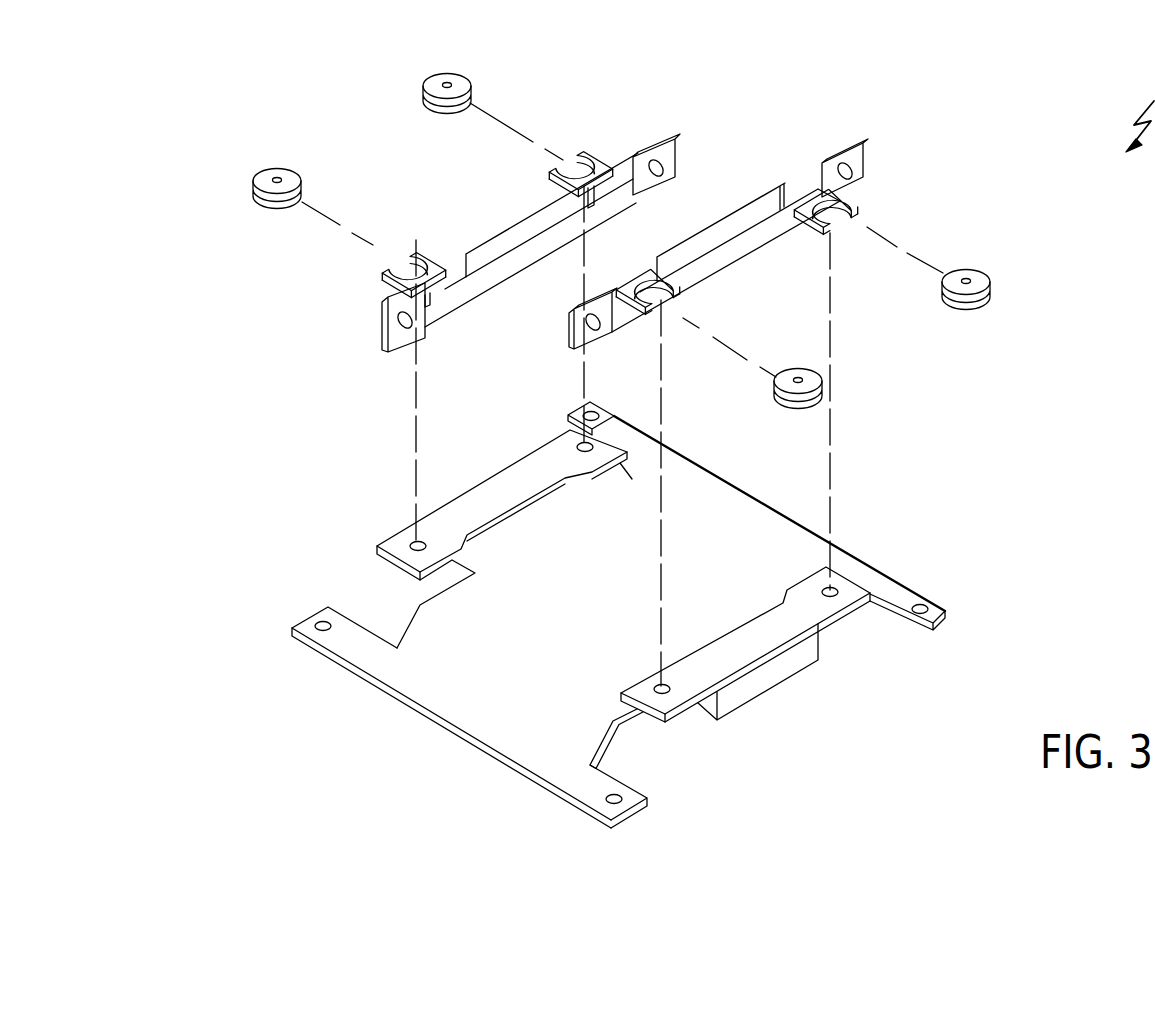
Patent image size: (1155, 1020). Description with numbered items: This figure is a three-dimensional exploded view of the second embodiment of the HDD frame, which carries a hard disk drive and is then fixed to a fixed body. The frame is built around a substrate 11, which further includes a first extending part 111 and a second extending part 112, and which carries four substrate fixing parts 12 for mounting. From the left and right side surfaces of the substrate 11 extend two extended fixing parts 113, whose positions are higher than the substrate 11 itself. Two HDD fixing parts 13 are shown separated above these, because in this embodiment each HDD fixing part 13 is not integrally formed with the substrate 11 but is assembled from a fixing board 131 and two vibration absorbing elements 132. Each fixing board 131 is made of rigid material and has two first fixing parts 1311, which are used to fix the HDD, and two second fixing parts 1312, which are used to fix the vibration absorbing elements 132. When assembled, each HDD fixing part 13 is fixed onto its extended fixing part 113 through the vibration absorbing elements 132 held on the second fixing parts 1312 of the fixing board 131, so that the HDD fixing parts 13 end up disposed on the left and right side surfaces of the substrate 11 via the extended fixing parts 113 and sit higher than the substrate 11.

The substrate 11 is at (583, 587).
The first extending part 111 is at (493, 680).
The second extending part 112 is at (747, 513).
The extended fixing part 113 is at (507, 488).
The substrate fixing part 12 is at (350, 638).
The HDD fixing part 13 is at (478, 170).
The fixing board 131 is at (508, 233).
The vibration absorbing element 132 is at (442, 98).
The first fixing part 1311 is at (412, 302).
The second fixing part 1312 is at (420, 252).